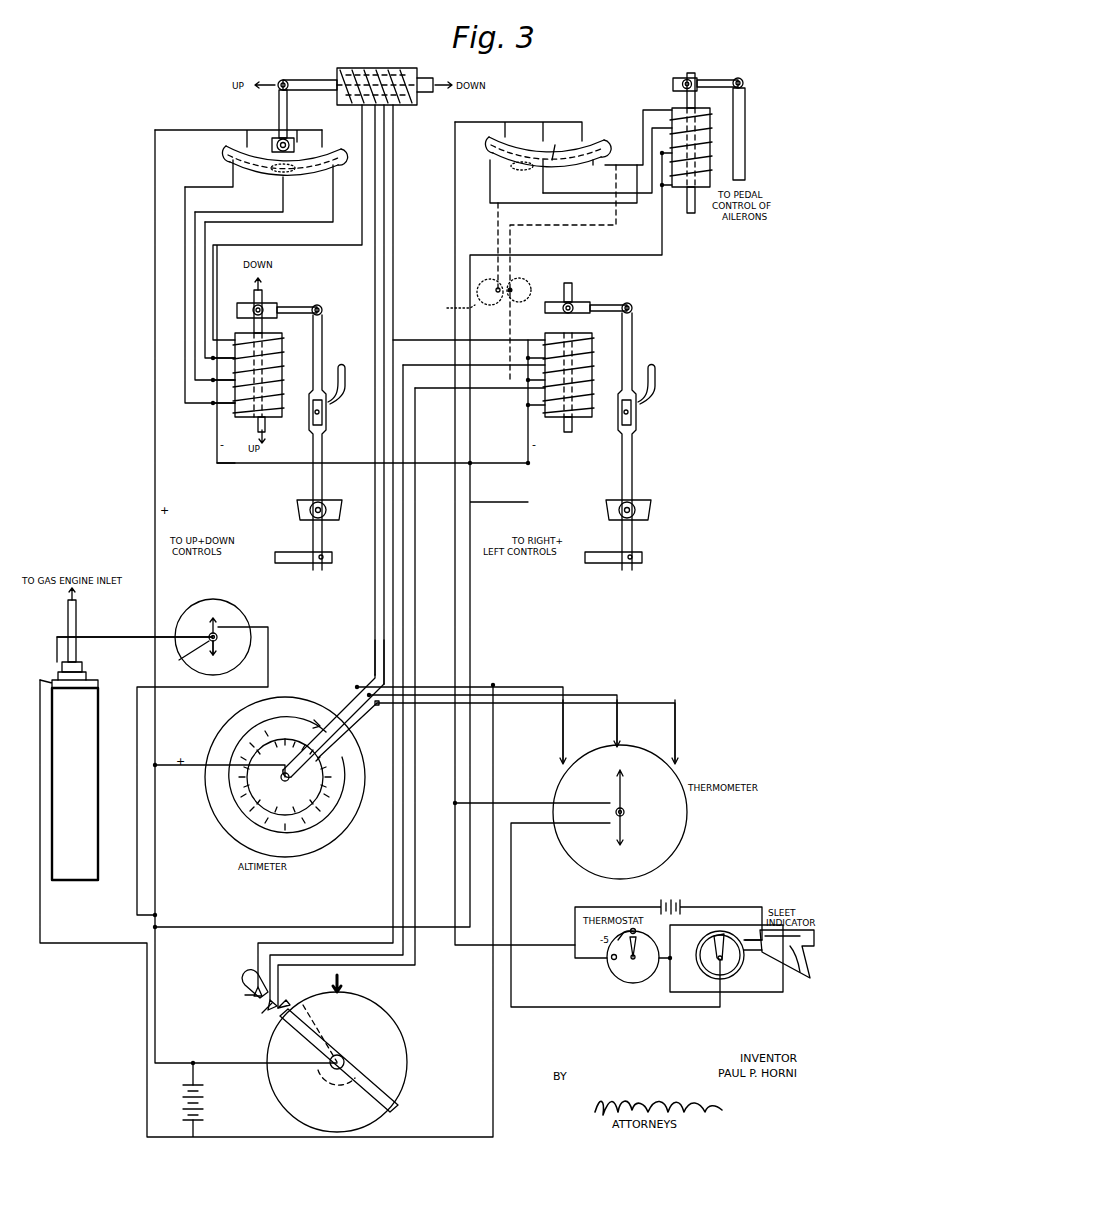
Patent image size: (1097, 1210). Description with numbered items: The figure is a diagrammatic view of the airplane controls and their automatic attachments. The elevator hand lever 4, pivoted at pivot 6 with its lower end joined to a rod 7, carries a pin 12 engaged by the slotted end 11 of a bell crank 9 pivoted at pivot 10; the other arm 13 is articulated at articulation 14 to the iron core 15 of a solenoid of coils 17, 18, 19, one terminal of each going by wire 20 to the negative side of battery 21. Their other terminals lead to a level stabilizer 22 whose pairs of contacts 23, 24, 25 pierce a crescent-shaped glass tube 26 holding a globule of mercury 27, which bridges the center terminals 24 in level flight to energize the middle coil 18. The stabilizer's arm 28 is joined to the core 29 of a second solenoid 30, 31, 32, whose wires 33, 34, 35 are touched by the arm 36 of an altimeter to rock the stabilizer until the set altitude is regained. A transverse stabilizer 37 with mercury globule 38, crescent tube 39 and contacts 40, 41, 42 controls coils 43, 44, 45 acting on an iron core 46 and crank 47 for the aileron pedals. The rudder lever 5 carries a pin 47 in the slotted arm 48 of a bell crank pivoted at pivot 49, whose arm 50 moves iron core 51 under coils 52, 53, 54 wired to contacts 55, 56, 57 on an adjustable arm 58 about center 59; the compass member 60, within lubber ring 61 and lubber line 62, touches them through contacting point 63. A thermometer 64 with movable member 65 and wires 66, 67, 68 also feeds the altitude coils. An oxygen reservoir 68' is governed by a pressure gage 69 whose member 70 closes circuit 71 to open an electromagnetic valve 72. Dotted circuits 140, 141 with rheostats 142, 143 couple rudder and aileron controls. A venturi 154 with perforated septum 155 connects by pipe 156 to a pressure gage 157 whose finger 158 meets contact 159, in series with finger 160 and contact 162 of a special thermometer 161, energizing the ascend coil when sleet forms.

The hand lever 4 is at (345, 380).
The hand lever 5 is at (656, 372).
The pivot 6 is at (324, 503).
The rod 7 is at (301, 565).
The bell crank 9 is at (323, 345).
The pivot 10 is at (320, 306).
The slotted end 11 is at (294, 420).
The pin 12 is at (323, 416).
The arm of the bell crank 13 is at (298, 306).
The articulation 14 is at (262, 300).
The iron core 15 is at (252, 296).
The solenoid coil 17 is at (282, 391).
The middle solenoid coil 18 is at (282, 366).
The solenoid coil 19 is at (282, 341).
The wire 20 is at (243, 464).
The battery 21 is at (182, 1096).
The level stabilizer 22 is at (238, 148).
The pair of contacts 23 is at (232, 173).
The center terminals 24 is at (283, 182).
The pair of contacts 25 is at (334, 170).
The crescent-shaped glass tube 26 is at (322, 166).
The globule of mercury 27 is at (268, 170).
The arm 28 is at (278, 101).
The core 29 is at (310, 79).
The solenoid coil 30 is at (350, 70).
The solenoid coil 31 is at (378, 70).
The solenoid coil 32 is at (406, 70).
The wire 33 is at (350, 680).
The wire 34 is at (366, 672).
The wire 35 is at (350, 725).
The arm of the altimeter 36 is at (296, 781).
The transverse stabilizer 37 is at (490, 144).
The mercury globule 38 is at (526, 171).
The crescent tube 39 is at (556, 145).
The pair of contacts 40 is at (490, 187).
The pair of contacts 41 is at (548, 175).
The pair of contacts 42 is at (592, 166).
The solenoid coil 43 is at (710, 178).
The solenoid coil 44 is at (710, 152).
The solenoid coil 45 is at (710, 122).
The iron core 46 is at (691, 214).
The crank / pin 47 is at (633, 414).
The arm of bell crank 48 is at (633, 345).
The pivot 49 is at (633, 306).
The arm 50 is at (610, 305).
The iron core 51 is at (568, 432).
The solenoid coil 52 is at (592, 394).
The solenoid coil 53 is at (592, 366).
The solenoid coil 54 is at (592, 341).
The contact 55 is at (250, 1010).
The center contact 56 is at (262, 1003).
The contact 57 is at (288, 996).
The adjustable arm 58 is at (240, 970).
The center 59 is at (350, 1062).
The compass member 60 is at (338, 1048).
The lubber ring 61 is at (408, 1052).
The lubber line 62 is at (343, 984).
The contacting point 63 is at (265, 1018).
The thermometer 64 is at (687, 829).
The movable member 65 is at (613, 825).
The wire 66 is at (570, 760).
The wire 67 is at (621, 745).
The wire 68 is at (689, 731).
The reservoir of oxygen 68' is at (75, 784).
The pressure gage or aneroid barometer 69 is at (245, 616).
The movable member 70 is at (184, 665).
The circuit 71 is at (123, 638).
The electromagnetic valve 72 is at (83, 667).
The circuit 140 is at (598, 225).
The circuit 141 is at (497, 230).
The adjusting rheostat 142 is at (528, 286).
The adjusting rheostat 143 is at (447, 308).
The venturi 154 is at (808, 978).
The perforated septum 155 is at (778, 950).
The pipe 156 is at (750, 936).
The sensitive pressure gage 157 is at (702, 960).
The movable contact finger 158 is at (728, 960).
The contact 159 is at (708, 942).
The finger 160 is at (636, 955).
The special thermometer 161 is at (617, 977).
The contact 162 is at (610, 964).